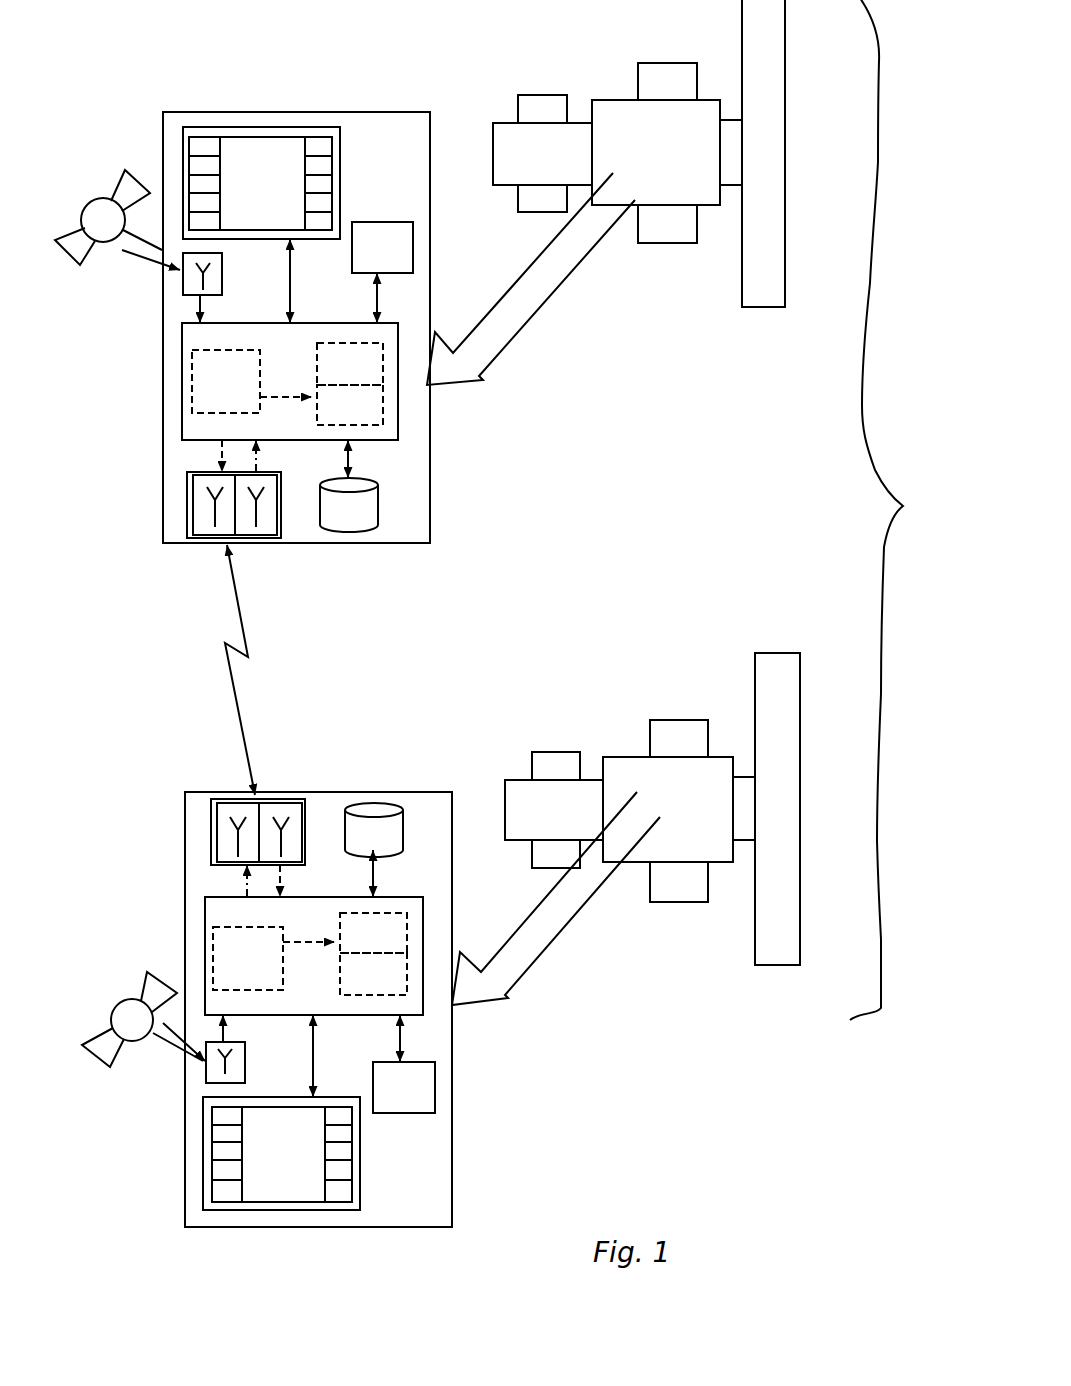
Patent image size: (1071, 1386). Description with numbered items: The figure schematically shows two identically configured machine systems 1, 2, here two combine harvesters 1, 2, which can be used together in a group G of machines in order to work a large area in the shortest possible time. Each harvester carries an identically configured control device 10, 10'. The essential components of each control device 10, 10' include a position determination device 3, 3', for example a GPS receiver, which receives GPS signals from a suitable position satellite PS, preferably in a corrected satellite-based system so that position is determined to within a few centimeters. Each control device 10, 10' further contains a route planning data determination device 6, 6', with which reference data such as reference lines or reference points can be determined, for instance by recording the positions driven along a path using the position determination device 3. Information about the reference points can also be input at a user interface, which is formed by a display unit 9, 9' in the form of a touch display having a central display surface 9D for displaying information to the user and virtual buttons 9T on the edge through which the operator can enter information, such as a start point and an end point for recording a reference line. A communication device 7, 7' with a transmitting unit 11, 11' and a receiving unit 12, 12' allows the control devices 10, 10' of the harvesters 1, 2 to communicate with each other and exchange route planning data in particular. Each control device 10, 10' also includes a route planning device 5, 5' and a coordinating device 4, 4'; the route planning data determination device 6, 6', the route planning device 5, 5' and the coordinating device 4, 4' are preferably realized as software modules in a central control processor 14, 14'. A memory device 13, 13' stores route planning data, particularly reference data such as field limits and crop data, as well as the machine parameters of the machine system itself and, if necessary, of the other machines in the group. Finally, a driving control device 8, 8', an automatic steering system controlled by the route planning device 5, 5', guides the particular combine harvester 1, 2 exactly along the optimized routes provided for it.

The machine system 1 is at (667, 80).
The machine system 2 is at (676, 728).
The position determination device 3 is at (169, 298).
The position determination device 3' is at (186, 1073).
The coordinating device 4 is at (396, 430).
The coordinating device 4' is at (421, 910).
The route planning device 5 is at (396, 389).
The route planning device 5' is at (422, 952).
The route planning data determination device 6 is at (208, 381).
The route planning data determination device 6' is at (232, 954).
The communication device 7 is at (184, 500).
The communication device 7' is at (219, 848).
The driving control device 8 is at (408, 272).
The driving control device 8' is at (441, 1064).
The display unit 9 is at (272, 150).
The display unit 9' is at (281, 1194).
The central display surface 9D is at (252, 147).
The virtual buttons 9T is at (197, 163).
The control device 10 is at (323, 302).
The control device 10' is at (334, 975).
The transmitting unit 11 is at (188, 553).
The transmitting unit 11' is at (204, 796).
The receiving unit 12 is at (282, 544).
The receiving unit 12' is at (299, 796).
The memory device 13 is at (368, 517).
The memory device 13' is at (374, 816).
The central control processor 14 is at (344, 339).
The central control processor 14' is at (369, 997).
The position satellite PS is at (93, 215).
The group of machines G is at (892, 510).